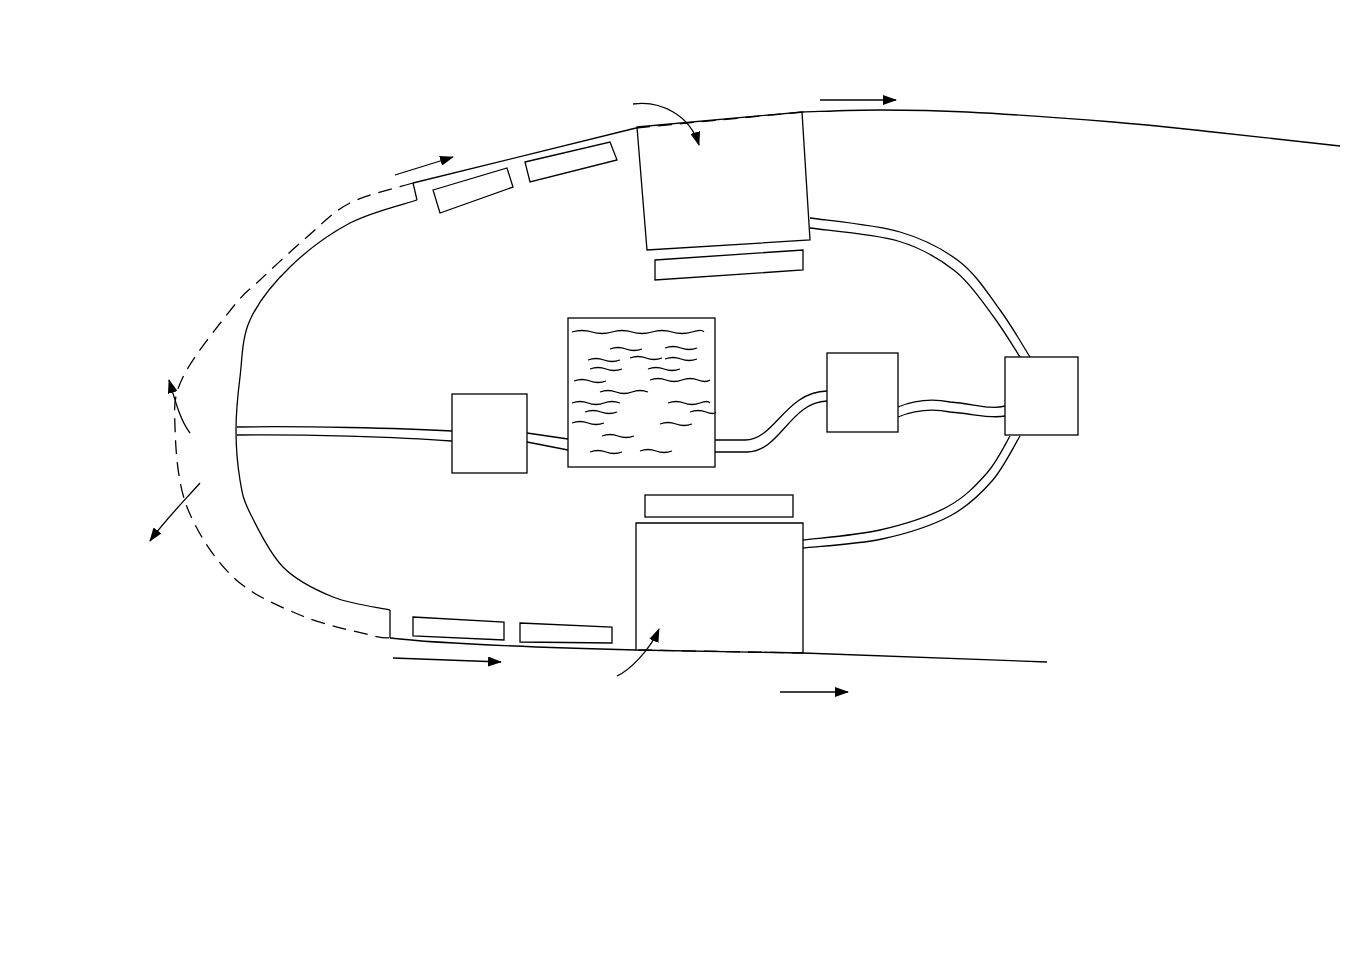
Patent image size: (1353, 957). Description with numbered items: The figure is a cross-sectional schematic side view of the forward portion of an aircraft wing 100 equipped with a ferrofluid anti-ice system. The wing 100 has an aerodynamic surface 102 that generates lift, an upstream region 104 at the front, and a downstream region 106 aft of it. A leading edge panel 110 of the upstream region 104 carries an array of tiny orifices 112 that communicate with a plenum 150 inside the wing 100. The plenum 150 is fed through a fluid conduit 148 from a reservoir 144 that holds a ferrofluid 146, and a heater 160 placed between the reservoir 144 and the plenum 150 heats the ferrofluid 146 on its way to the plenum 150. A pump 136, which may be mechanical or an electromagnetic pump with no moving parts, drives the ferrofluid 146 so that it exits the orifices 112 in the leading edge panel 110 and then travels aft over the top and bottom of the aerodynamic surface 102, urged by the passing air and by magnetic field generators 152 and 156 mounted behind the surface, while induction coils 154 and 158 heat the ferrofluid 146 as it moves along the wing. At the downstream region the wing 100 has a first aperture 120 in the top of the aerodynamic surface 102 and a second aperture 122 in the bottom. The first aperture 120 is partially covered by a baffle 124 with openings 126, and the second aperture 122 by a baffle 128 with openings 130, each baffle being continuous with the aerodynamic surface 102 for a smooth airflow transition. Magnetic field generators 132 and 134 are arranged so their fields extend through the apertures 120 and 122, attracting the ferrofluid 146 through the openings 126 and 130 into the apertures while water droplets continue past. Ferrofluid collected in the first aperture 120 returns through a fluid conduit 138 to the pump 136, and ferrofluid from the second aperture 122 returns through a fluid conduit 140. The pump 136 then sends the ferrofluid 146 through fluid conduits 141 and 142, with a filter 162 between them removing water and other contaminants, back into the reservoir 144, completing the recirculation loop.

The wing 100 is at (326, 96).
The aerodynamic surface 102 is at (548, 143).
The upstream region 104 is at (246, 248).
The downstream region 106 is at (969, 100).
The leading edge panel 110 is at (175, 447).
The orifices 112 is at (235, 297).
The first aperture 120 is at (797, 180).
The second aperture 122 is at (792, 607).
The baffle 124 is at (735, 112).
The openings 126 is at (770, 113).
The baffle 128 is at (692, 653).
The openings 130 is at (747, 654).
The magnetic field generator 132 is at (773, 268).
The magnetic field generator 134 is at (750, 498).
The pump 136 is at (1080, 390).
The fluid conduit 138 is at (980, 275).
The fluid conduit 140 is at (905, 538).
The fluid conduit 141 is at (935, 418).
The fluid conduit 142 is at (745, 436).
The reservoir 144 is at (595, 468).
The ferrofluid 146 is at (716, 347).
The fluid conduit 148 is at (375, 436).
The plenum 150 is at (220, 386).
The magnetic field generator 152 is at (483, 198).
The induction coil 154 is at (567, 176).
The magnetic field generator 156 is at (460, 625).
The induction coil 158 is at (570, 633).
The heater 160 is at (472, 405).
The filter 162 is at (897, 373).